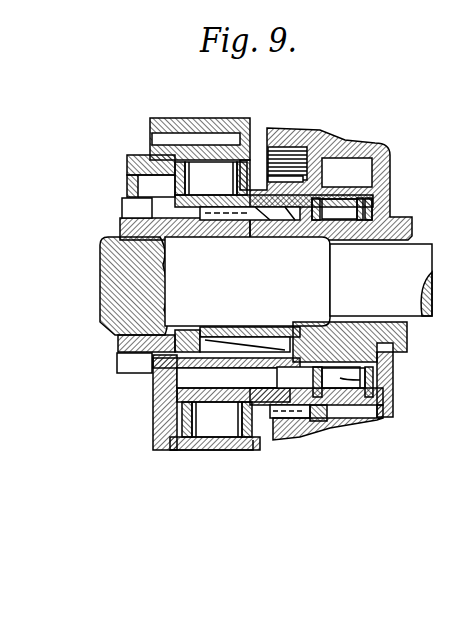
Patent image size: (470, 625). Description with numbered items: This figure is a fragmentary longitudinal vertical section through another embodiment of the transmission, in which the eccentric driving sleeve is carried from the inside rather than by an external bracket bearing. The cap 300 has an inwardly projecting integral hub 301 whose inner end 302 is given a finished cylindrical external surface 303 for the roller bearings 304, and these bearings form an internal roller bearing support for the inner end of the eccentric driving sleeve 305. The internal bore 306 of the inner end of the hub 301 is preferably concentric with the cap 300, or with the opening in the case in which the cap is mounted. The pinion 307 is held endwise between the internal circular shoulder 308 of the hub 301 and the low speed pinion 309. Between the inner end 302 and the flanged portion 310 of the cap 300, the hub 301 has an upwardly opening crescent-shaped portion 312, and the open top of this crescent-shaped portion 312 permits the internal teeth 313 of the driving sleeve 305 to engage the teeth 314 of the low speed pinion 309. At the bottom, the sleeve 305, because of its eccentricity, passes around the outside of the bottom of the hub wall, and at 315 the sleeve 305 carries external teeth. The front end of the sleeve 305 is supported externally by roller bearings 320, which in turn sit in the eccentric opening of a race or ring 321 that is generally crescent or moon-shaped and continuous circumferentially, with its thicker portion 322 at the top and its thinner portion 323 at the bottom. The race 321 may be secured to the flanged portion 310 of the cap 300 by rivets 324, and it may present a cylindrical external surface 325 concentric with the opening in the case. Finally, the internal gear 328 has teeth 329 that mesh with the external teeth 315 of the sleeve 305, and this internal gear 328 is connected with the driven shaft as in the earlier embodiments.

The cap 300 is at (143, 112).
The hub 301 is at (198, 358).
The inner end of hub 302 is at (410, 338).
The finished cylindrical external surface 303 is at (393, 365).
The roller bearings 304 is at (392, 382).
The eccentric driving sleeve 305 is at (240, 237).
The internal bore 306 is at (365, 315).
The pinion 307 is at (277, 242).
The internal circular shoulder 308 is at (298, 240).
The low speed pinion 309 is at (122, 230).
The flanged portion 310 is at (157, 442).
The crescent-shaped portion 312 is at (258, 337).
The internal teeth 313 is at (176, 205).
The teeth 314 is at (320, 197).
The external teeth 315 is at (293, 420).
The roller bearings 320 is at (257, 133).
The race 321 is at (180, 125).
The thicker portion 322 is at (230, 118).
The thinner portion 323 is at (205, 452).
The rivets 324 is at (163, 140).
The cylindrical external surface 325 is at (236, 453).
The internal gear 328 is at (393, 408).
The teeth 329 is at (303, 437).